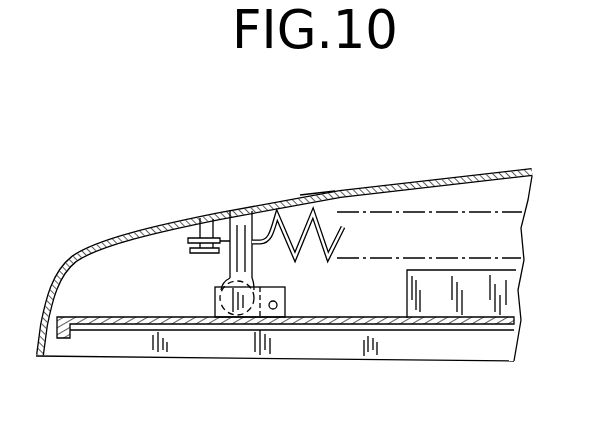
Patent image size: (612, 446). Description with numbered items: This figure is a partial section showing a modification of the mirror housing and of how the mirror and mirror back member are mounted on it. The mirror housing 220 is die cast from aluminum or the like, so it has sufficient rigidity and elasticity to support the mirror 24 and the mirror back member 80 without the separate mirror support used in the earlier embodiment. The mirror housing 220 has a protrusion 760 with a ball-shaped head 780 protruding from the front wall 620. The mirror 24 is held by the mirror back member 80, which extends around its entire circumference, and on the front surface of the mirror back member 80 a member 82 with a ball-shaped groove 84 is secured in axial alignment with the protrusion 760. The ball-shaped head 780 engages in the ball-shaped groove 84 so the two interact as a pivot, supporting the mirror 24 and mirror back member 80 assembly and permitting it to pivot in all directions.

The mirror housing 220 is at (464, 175).
The front wall 620 is at (361, 189).
The protrusion 760 is at (245, 262).
The ball-shaped head 780 is at (215, 291).
The mirror back member 80 is at (355, 318).
The mirror 24 is at (352, 331).
The ball-shaped groove 84 is at (222, 332).
The member 82 is at (260, 318).